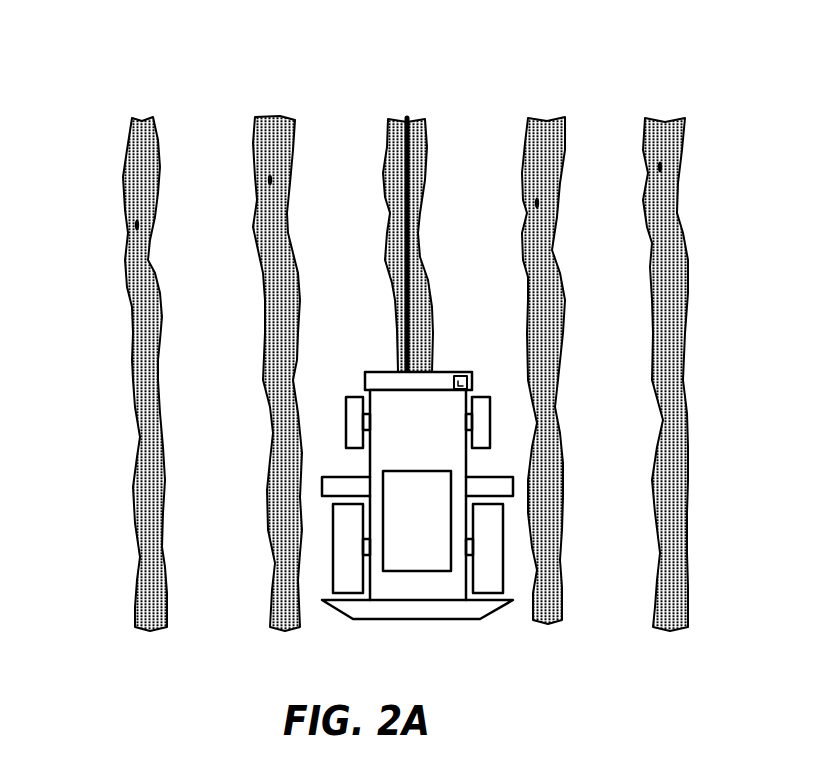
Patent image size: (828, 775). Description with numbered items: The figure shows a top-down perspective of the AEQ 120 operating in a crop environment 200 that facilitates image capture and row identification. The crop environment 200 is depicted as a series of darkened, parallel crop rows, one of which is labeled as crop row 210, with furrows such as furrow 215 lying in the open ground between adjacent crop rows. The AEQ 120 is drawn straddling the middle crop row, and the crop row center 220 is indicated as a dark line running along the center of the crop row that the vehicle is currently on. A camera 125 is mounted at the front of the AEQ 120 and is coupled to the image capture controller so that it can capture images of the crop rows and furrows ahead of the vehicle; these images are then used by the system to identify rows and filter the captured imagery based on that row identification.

The crop environment 200 is at (690, 24).
The crop row 210 is at (142, 260).
The furrow 215 is at (192, 388).
The crop row center 220 is at (407, 118).
The AEQ 120 is at (495, 604).
The camera 125 is at (462, 376).